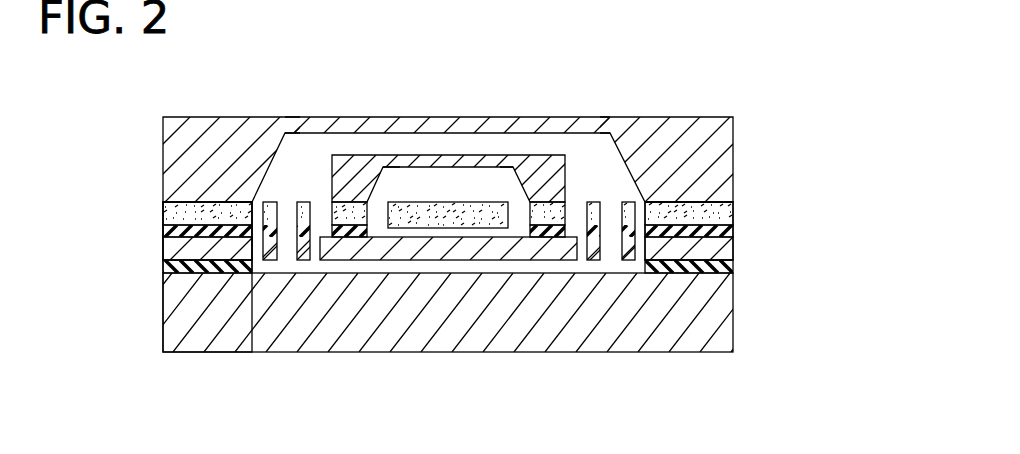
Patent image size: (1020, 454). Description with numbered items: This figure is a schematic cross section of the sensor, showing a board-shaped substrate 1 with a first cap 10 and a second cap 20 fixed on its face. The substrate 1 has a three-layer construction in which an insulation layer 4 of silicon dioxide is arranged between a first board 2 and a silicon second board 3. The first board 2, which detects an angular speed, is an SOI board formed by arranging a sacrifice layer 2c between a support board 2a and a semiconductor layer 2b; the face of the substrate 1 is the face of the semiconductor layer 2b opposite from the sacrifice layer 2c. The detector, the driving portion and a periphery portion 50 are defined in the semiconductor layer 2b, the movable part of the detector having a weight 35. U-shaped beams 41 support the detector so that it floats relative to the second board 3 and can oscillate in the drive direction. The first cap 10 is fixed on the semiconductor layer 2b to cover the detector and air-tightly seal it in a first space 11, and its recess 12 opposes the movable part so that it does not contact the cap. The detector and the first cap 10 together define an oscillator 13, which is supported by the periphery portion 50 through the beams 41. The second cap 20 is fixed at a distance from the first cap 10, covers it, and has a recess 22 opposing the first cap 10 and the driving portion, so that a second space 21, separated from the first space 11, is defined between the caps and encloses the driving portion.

The substrate 1 is at (156, 200).
The first board 2 is at (823, 171).
The support board 2a is at (730, 250).
The semiconductor layer 2b is at (730, 213).
The sacrifice layer 2c is at (730, 233).
The second board 3 is at (733, 313).
The insulation layer 4 is at (733, 267).
The first cap 10 is at (538, 178).
The first space 11 is at (463, 180).
The recess 12 is at (382, 179).
The oscillator 13 is at (395, 263).
The second cap 20 is at (238, 150).
The second space 21 is at (587, 167).
The recess 22 is at (277, 153).
The weight 35 is at (472, 230).
The beam 41 is at (268, 263).
The periphery portion 50 is at (187, 207).